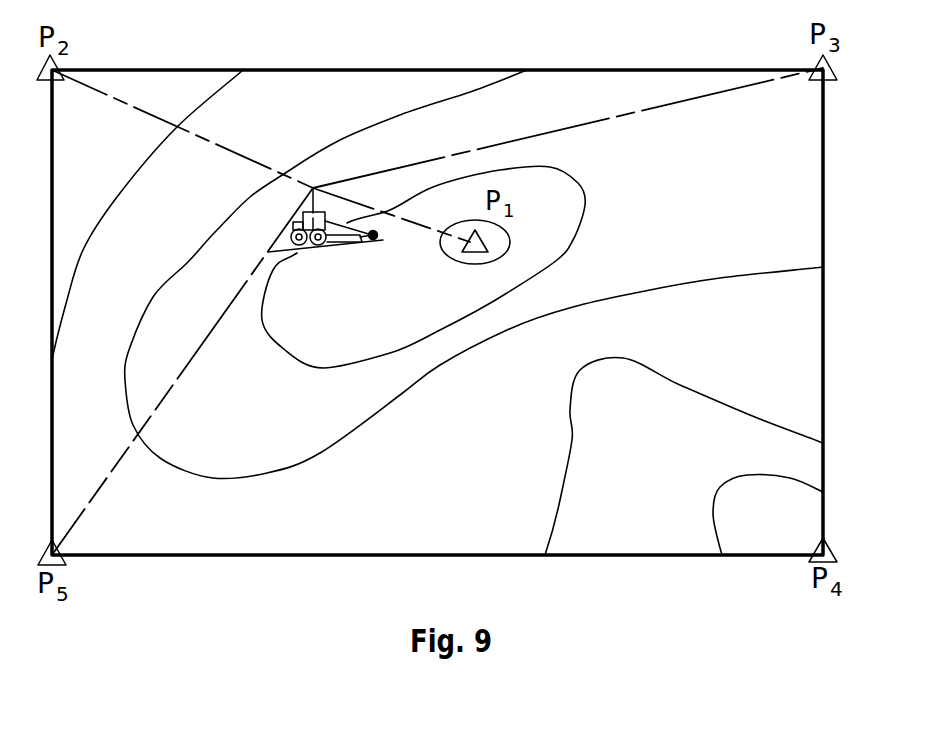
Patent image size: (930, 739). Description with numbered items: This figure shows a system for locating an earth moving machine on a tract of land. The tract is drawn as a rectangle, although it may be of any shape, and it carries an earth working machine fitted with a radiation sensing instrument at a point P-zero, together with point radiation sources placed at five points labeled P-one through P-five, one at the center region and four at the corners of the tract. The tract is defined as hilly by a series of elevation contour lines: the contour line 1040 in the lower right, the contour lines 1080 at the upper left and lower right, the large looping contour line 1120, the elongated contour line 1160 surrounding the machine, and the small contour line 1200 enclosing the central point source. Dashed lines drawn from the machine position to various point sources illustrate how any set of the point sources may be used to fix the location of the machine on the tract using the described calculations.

The contour line 1040 is at (715, 496).
The contour line 1080 is at (117, 195).
The contour line 1120 is at (350, 431).
The contour line 1160 is at (578, 230).
The contour line 1200 is at (460, 263).